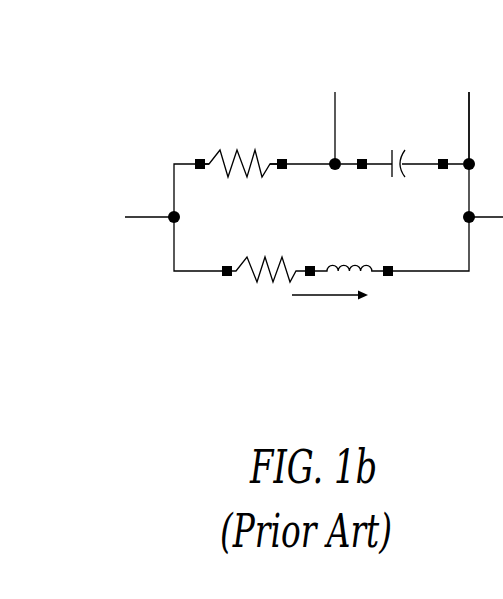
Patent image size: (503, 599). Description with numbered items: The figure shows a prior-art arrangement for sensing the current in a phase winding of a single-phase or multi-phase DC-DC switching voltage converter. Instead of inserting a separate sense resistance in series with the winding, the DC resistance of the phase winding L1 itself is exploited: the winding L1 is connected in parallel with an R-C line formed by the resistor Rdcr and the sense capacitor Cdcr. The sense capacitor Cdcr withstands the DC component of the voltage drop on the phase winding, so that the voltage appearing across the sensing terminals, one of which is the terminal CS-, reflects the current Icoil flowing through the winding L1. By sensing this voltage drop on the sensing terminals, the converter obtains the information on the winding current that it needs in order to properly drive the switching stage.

The sensing terminal CS- is at (470, 116).
The sense resistor of the R-C line Rdcr is at (241, 149).
The sense capacitor Cdcr is at (402, 149).
The phase winding L1 is at (354, 257).
The inductor coil current Icoil is at (330, 312).